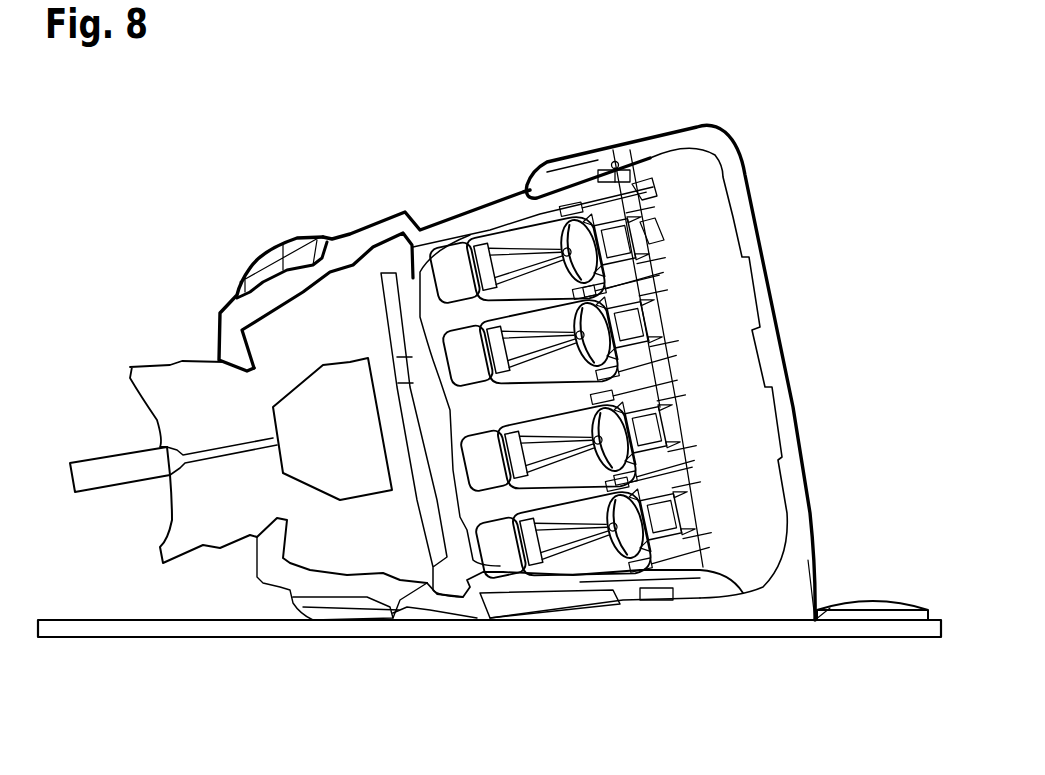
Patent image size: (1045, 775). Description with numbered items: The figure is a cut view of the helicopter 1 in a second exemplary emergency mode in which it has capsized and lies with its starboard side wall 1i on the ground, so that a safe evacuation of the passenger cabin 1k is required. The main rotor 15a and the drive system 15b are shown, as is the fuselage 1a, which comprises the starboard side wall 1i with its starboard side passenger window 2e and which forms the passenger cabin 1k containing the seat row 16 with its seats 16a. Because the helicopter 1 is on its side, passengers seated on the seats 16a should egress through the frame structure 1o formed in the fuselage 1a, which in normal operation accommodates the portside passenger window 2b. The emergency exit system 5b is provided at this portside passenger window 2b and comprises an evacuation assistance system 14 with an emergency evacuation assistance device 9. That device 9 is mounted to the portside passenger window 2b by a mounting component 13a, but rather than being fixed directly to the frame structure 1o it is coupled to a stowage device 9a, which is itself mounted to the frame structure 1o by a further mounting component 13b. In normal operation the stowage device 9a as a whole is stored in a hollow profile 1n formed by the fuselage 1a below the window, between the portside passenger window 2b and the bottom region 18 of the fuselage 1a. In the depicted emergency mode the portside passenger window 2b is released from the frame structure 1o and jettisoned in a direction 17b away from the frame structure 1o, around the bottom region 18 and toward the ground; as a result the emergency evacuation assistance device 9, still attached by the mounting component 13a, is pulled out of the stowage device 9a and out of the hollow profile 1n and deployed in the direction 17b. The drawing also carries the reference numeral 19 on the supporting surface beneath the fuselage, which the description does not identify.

The helicopter 1 is at (300, 176).
The fuselage 1a is at (713, 585).
The starboard side wall 1i is at (631, 610).
The passenger cabin 1k is at (446, 420).
The hollow profile 1n is at (638, 150).
The frame structure 1o is at (423, 215).
The portside passenger window 2b is at (884, 616).
The starboard side passenger window 2e is at (503, 603).
The emergency exit system 5b is at (506, 189).
The emergency evacuation assistance device 9 is at (753, 222).
The stowage device 9a is at (618, 158).
The mounting component 13a is at (817, 630).
The mounting component 13b is at (622, 231).
The evacuation assistance system 14 is at (590, 141).
The main rotor 15a is at (74, 432).
The drive system 15b is at (246, 389).
The seat row 16 is at (563, 601).
The seats 16a is at (547, 562).
The direction 17b is at (545, 124).
The bottom region 18 is at (780, 357).
The mounting plate 19 is at (193, 630).